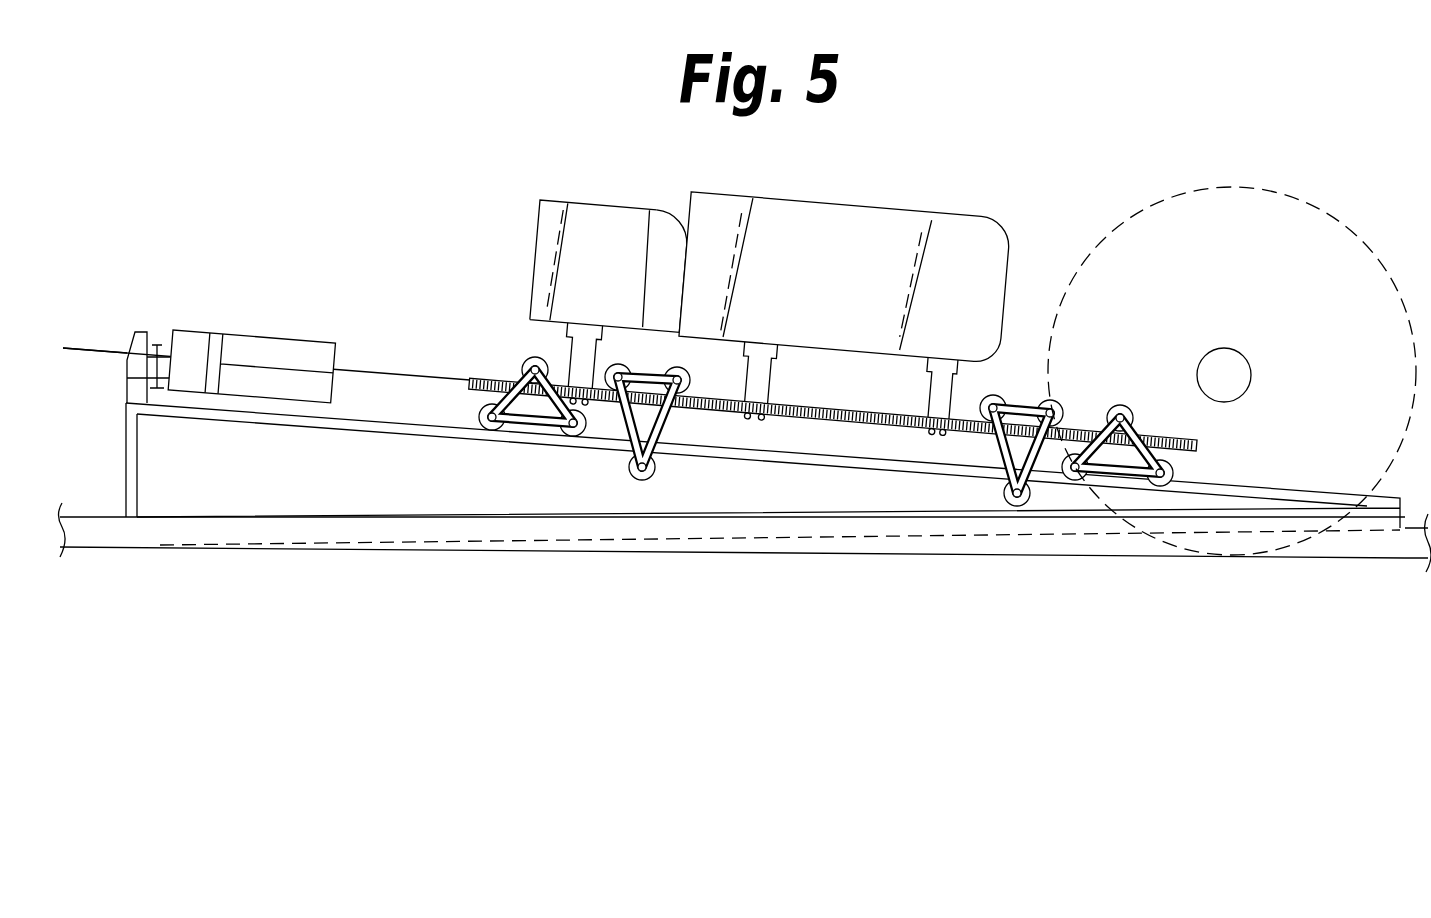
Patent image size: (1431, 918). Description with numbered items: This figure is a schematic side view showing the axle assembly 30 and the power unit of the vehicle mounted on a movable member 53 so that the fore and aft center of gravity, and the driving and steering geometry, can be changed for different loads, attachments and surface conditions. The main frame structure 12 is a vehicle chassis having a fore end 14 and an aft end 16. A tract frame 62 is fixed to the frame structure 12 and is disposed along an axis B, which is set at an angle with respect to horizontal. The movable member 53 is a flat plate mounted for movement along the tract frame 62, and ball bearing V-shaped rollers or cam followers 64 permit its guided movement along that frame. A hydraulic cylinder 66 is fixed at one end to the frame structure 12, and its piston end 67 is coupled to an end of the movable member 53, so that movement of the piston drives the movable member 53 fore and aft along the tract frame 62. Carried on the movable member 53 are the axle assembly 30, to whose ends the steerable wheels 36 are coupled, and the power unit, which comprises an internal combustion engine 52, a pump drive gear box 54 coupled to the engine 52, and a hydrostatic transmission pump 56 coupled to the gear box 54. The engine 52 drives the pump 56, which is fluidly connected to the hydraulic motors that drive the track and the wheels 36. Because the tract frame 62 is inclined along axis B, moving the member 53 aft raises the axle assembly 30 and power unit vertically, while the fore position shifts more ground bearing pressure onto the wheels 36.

The main frame structure 12 is at (186, 522).
The fore end 14 is at (1370, 530).
The aft end 16 is at (108, 515).
The axle assembly 30 is at (1251, 368).
The wheel 36 is at (1145, 205).
The internal combustion engine 52 is at (825, 291).
The movable member 53 is at (487, 377).
The pump drive gear box 54 is at (661, 224).
The hydrostatic transmission pump 56 is at (585, 289).
The tract frame 62 is at (360, 440).
The rollers 64 is at (528, 362).
The hydraulic cylinder 66 is at (268, 332).
The piston end 67 is at (438, 377).
The axis B is at (92, 346).